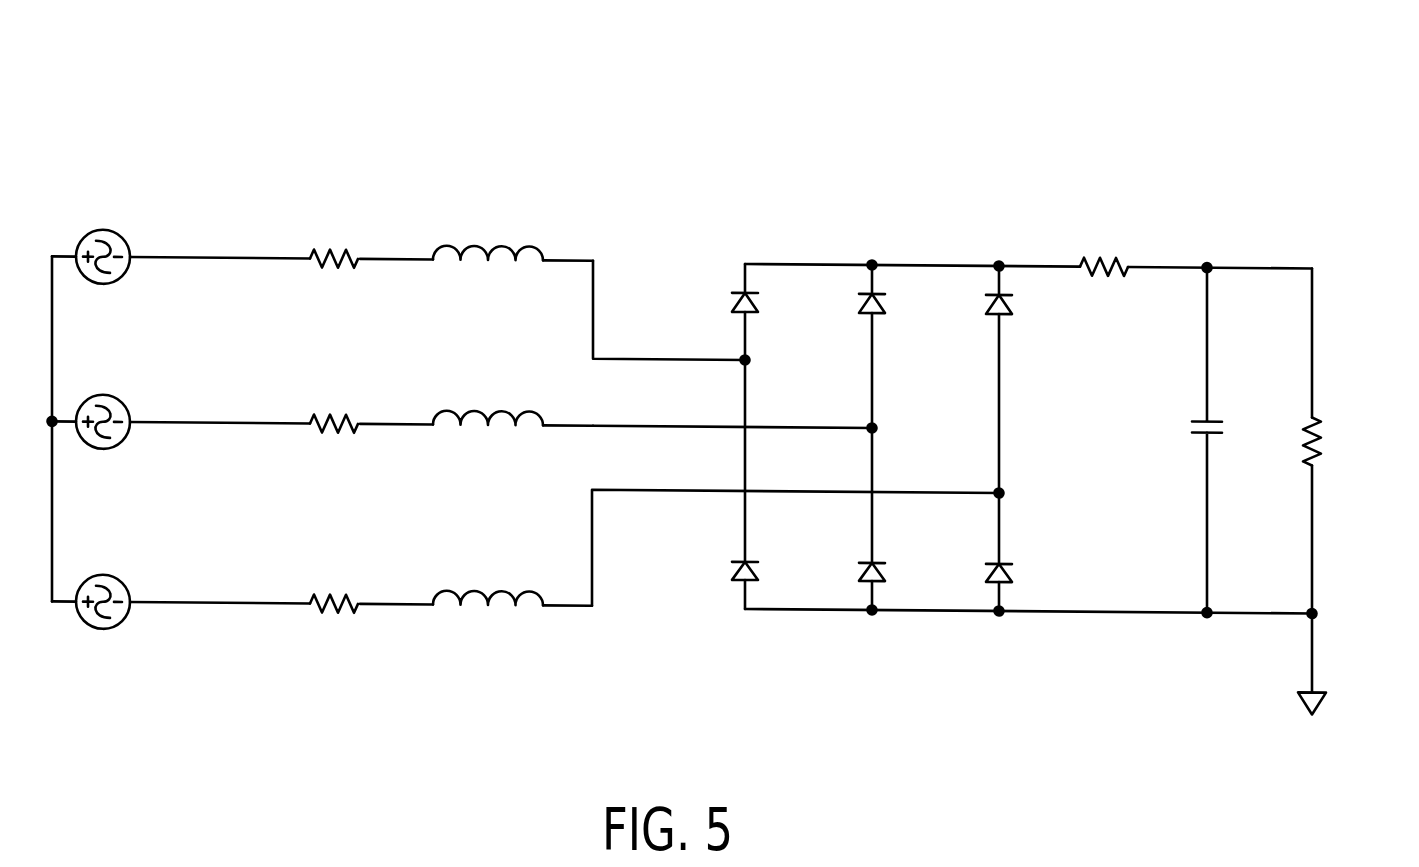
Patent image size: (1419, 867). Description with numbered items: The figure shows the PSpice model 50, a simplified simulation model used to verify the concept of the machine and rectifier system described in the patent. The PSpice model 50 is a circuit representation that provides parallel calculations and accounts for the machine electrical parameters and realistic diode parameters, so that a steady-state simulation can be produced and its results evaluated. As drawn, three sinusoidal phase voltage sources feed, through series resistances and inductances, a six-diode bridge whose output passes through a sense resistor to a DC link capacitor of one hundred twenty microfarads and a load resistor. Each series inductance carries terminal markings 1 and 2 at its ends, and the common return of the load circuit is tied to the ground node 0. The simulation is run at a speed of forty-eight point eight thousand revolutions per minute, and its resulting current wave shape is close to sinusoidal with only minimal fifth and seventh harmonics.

The PSpice model 50 is at (718, 122).
The inductor terminal 1 is at (396, 415).
The inductor terminal 2 is at (568, 415).
The ground node 0 is at (1319, 671).